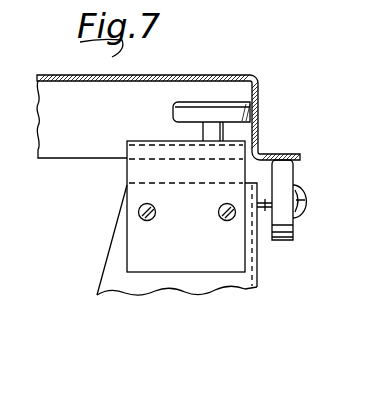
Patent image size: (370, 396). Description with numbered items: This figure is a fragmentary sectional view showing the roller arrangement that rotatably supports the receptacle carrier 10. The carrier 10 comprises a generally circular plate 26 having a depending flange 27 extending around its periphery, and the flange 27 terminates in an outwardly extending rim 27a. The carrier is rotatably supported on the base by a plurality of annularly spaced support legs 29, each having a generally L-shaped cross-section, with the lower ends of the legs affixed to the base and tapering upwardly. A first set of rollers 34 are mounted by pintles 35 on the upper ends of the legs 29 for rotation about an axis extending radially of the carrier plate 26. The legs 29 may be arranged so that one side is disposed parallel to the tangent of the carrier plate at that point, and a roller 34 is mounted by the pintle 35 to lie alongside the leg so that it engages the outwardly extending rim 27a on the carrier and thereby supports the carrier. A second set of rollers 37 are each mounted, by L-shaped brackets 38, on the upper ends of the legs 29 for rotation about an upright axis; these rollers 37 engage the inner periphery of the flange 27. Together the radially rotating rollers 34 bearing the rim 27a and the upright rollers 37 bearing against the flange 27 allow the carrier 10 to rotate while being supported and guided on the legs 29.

The carrier 10 is at (70, 158).
The circular plate 26 is at (148, 75).
The depending flange 27 is at (258, 127).
The outwardly extending rim 27a is at (300, 156).
The support leg 29 is at (102, 280).
The roller 34 is at (293, 234).
The pintle 35 is at (264, 212).
The roller 37 is at (258, 93).
The L-shaped bracket 38 is at (128, 172).